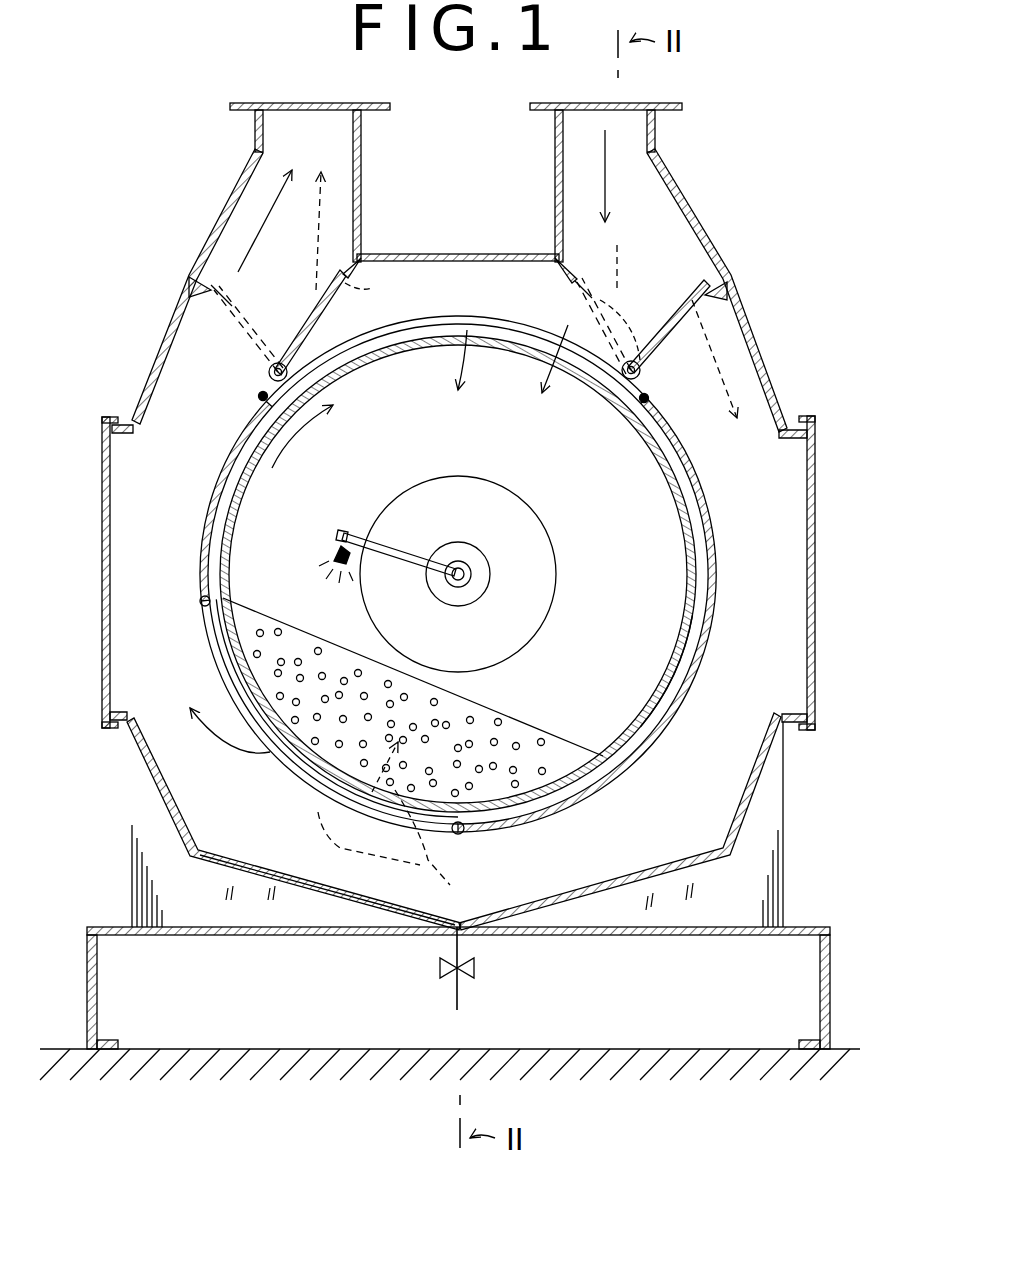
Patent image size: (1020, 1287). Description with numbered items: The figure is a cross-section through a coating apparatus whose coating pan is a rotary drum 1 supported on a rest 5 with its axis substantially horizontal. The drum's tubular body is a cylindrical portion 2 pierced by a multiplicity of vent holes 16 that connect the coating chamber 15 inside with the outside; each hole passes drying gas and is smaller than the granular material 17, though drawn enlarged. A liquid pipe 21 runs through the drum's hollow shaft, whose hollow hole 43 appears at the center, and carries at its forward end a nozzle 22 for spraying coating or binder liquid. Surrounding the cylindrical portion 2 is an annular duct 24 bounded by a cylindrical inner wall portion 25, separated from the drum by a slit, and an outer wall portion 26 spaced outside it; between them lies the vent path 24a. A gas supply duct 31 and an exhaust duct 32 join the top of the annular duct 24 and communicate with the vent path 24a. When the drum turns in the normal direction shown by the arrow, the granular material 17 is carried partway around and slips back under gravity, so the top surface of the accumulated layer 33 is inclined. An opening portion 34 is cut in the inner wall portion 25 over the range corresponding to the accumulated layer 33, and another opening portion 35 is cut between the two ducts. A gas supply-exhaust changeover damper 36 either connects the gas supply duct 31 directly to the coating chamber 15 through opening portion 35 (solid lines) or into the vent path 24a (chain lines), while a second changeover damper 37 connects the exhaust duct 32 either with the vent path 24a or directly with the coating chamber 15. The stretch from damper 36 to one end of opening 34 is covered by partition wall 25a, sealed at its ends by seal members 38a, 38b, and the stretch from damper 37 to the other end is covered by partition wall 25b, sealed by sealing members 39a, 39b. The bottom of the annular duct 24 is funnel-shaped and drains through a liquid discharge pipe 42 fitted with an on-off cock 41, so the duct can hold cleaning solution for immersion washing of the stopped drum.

The rotary drum 1 is at (487, 582).
The cylindrical portion 2 is at (458, 599).
The rest 5 is at (830, 1010).
The coating chamber 15 is at (532, 428).
The vent holes 16 is at (690, 686).
The granular material 17 is at (431, 690).
The liquid pipe 21 is at (468, 561).
The nozzle 22 is at (339, 547).
The annular duct 24 is at (783, 815).
The vent path 24a is at (600, 873).
The inner wall portion 25 is at (680, 792).
The partition wall 25a is at (704, 655).
The partition wall 25b is at (205, 502).
The outer wall portion 26 is at (400, 255).
The gas supply duct 31 is at (670, 210).
The exhaust duct 32 is at (240, 215).
The accumulated layer 33 is at (515, 722).
The opening portion 34 is at (280, 760).
The opening portion 35 is at (445, 322).
The gas supply-exhaust changeover damper 36 is at (700, 330).
The gas supply-exhaust changeover damper 37 is at (315, 318).
The seal member 38a is at (648, 398).
The seal member 38b is at (462, 836).
The sealing member 39a is at (260, 395).
The sealing member 39b is at (200, 604).
The on-off cock 41 is at (440, 968).
The liquid discharge pipe 42 is at (457, 1005).
The hollow hole 43 is at (471, 586).